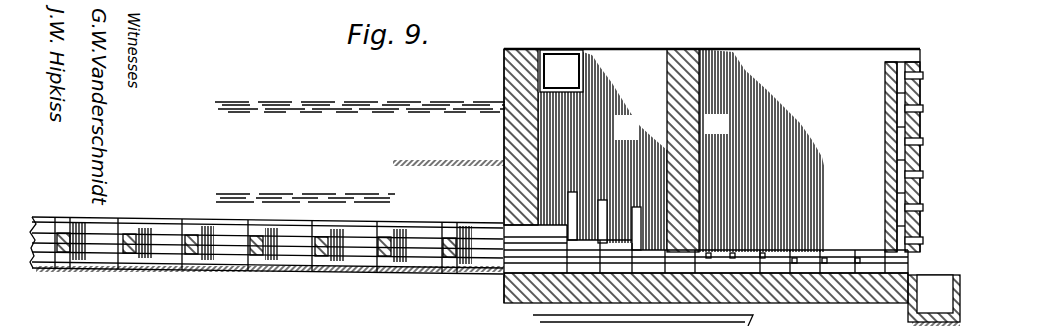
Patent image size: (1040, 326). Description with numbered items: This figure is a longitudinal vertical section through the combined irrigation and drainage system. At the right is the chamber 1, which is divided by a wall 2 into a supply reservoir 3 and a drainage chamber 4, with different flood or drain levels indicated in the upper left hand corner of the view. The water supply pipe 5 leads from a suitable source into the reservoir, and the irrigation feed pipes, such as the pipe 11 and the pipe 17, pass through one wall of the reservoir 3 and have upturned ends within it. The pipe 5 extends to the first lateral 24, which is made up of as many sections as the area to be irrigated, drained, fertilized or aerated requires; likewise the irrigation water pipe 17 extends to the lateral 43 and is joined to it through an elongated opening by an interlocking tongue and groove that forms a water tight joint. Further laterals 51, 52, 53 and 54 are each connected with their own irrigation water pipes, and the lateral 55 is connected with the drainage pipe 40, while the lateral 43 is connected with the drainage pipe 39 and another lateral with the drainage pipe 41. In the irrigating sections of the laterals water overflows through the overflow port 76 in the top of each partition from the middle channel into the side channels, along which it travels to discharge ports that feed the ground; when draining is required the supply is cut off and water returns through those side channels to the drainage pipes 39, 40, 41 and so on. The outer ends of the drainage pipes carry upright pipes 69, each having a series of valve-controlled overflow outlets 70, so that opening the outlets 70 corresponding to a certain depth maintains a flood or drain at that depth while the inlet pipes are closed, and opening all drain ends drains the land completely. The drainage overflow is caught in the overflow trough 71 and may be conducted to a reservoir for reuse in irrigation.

The chamber 1 is at (695, 52).
The wall 2 is at (703, 52).
The supply reservoir 3 is at (602, 151).
The drainage chamber 4 is at (717, 124).
The water supply pipe 5 is at (560, 57).
The irrigation feed pipe 11 is at (603, 200).
The irrigation water pipe 17 is at (637, 208).
The first lateral 24 is at (450, 258).
The drainage pipe 39 is at (808, 244).
The drainage pipe 40 is at (781, 263).
The drainage pipe 41 is at (870, 270).
The lateral 43 is at (322, 257).
The lateral 51 is at (258, 256).
The lateral 52 is at (190, 255).
The lateral 53 is at (128, 254).
The lateral 54 is at (68, 253).
The lateral 55 is at (385, 258).
The upright pipe 69 is at (900, 108).
The overflow outlets 70 is at (924, 142).
The overflow trough 71 is at (945, 293).
The overflow port 76 is at (893, 255).